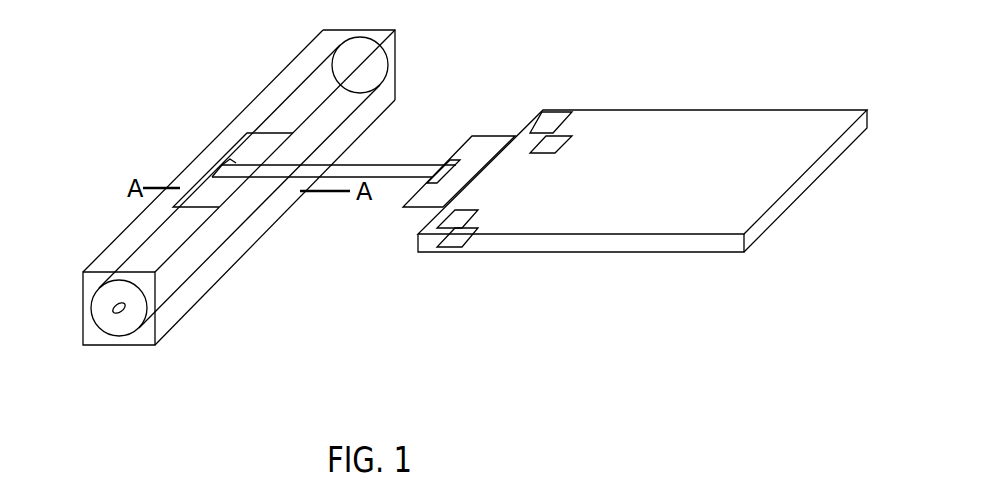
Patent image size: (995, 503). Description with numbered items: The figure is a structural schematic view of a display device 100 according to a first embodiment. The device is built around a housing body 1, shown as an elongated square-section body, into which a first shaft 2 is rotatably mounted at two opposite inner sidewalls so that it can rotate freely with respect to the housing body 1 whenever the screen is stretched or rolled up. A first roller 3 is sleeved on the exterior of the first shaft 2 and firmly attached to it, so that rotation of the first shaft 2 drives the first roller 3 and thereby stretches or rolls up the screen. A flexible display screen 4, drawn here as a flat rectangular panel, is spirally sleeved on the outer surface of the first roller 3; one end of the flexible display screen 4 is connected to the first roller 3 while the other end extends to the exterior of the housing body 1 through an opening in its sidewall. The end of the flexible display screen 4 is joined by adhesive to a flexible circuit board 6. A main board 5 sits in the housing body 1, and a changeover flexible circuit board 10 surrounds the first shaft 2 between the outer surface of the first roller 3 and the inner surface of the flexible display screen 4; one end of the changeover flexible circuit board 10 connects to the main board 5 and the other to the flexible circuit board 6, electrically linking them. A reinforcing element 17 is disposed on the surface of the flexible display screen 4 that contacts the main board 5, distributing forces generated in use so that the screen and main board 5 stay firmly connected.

The display device 100 is at (130, 69).
The housing body 1 is at (239, 187).
The first shaft 2 is at (76, 352).
The first roller 3 is at (100, 248).
The flexible display screen 4 is at (642, 134).
The main board 5 is at (211, 170).
The flexible circuit board 6 is at (483, 119).
The changeover flexible circuit board 10 is at (353, 115).
The reinforcing element 17 is at (543, 124).